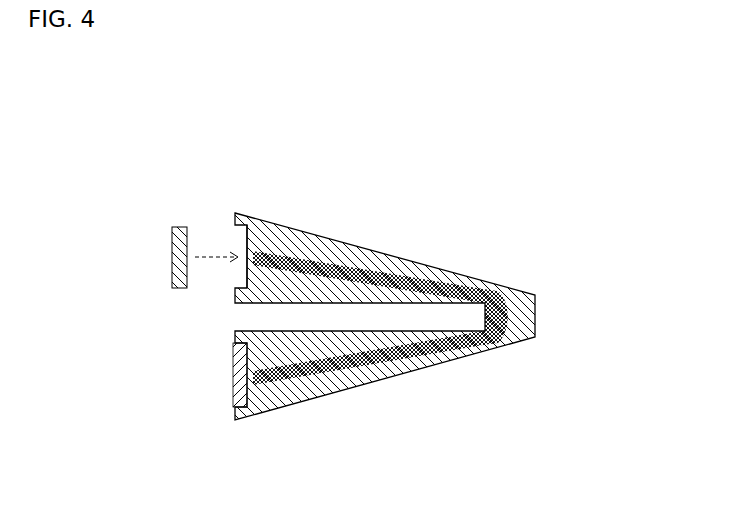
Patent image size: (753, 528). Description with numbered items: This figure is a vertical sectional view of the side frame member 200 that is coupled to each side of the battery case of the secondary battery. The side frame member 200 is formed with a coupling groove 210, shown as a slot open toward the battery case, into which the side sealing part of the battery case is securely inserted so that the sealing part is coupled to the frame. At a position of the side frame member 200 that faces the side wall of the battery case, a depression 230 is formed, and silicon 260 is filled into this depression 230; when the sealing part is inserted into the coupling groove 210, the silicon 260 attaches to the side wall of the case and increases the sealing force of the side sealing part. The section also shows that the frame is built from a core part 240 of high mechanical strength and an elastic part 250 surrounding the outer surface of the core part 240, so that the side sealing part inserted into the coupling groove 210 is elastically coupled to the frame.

The side frame member 200 is at (196, 152).
The coupling groove 210 is at (437, 362).
The depression 230 is at (247, 272).
The core part 240 is at (392, 268).
The elastic part 250 is at (527, 322).
The silicon 260 is at (173, 257).